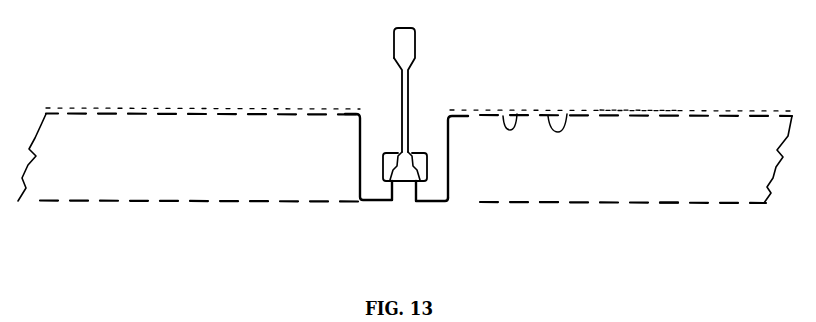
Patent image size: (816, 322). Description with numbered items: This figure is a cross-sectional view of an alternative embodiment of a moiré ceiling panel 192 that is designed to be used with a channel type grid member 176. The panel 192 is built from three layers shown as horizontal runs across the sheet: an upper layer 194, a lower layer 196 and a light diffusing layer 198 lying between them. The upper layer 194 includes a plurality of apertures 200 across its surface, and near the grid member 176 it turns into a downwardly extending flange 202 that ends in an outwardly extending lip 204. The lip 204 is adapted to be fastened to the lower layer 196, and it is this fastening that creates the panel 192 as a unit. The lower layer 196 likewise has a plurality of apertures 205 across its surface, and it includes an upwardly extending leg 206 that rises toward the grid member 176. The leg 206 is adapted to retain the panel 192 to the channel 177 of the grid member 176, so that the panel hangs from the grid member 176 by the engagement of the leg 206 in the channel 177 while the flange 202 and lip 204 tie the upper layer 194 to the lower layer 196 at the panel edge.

The moiré ceiling panel 192 is at (98, 225).
The channel type grid member 176 is at (408, 88).
The channel 177 is at (382, 168).
The upwardly extending leg 206 is at (415, 186).
The downwardly extending flange 202 is at (447, 172).
The outwardly extending lip 204 is at (428, 198).
The apertures 200 is at (517, 114).
The upper layer 194 is at (567, 114).
The light diffusing layer 198 is at (642, 112).
The lower layer 196 is at (552, 202).
The apertures 205 is at (657, 203).